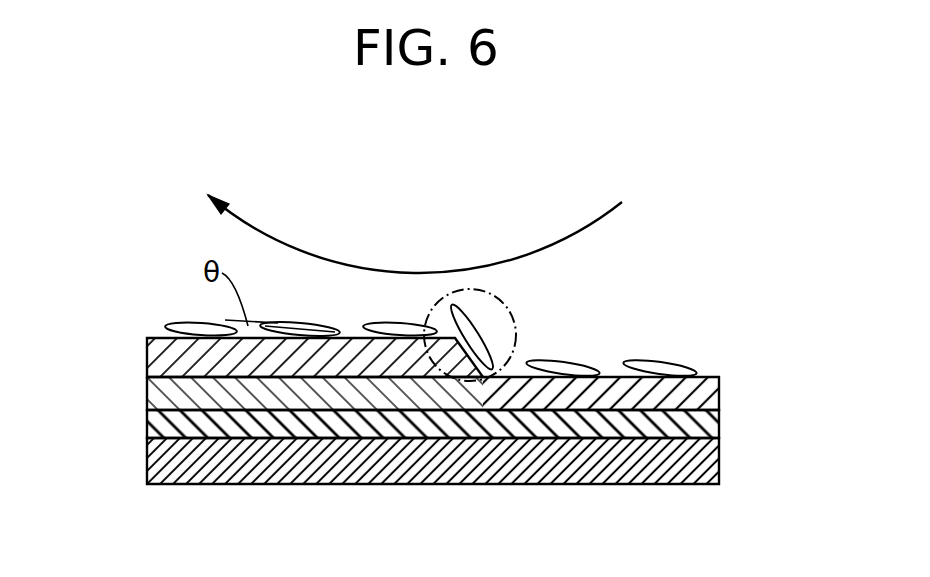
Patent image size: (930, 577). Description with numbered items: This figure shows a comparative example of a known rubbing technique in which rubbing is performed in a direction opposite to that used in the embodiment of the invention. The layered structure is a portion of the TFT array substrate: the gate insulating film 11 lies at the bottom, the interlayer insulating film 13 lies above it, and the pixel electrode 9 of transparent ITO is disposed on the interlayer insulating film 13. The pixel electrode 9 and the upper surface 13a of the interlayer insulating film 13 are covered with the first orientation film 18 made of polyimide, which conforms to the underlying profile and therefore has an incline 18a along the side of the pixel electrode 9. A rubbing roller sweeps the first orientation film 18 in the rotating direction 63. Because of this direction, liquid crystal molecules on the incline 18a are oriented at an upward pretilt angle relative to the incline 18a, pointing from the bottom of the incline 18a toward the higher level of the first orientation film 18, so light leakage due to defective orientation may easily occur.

The rotating direction 63 is at (410, 272).
The first orientation film 18 is at (157, 355).
The incline 18a is at (517, 313).
The upper surface 13a is at (631, 390).
The interlayer insulating film 13 is at (719, 428).
The gate insulating film 11 is at (719, 462).
The pixel electrode 9 is at (259, 407).